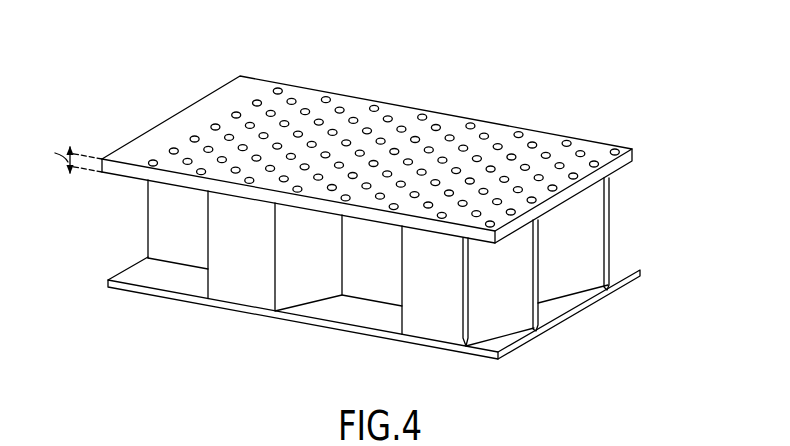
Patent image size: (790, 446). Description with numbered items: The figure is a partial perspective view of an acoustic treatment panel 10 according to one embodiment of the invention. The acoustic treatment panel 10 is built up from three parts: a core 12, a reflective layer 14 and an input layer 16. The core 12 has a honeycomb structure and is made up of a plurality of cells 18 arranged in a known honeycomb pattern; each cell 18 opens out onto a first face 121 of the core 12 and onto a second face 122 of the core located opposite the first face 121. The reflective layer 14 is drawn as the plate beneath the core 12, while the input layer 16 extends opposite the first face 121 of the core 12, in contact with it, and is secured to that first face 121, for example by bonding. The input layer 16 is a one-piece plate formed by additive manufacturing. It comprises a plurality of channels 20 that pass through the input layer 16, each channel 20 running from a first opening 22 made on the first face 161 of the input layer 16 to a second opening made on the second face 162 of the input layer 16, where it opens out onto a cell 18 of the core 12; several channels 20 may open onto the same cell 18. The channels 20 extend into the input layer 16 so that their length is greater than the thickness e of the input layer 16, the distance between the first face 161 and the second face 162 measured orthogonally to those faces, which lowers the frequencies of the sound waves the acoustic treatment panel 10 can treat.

The acoustic treatment panel 10 is at (654, 130).
The core 12 is at (157, 222).
The first face of the core 121 is at (141, 189).
The second face of the core 122 is at (143, 259).
The reflective layer 14 is at (355, 336).
The input layer 16 is at (439, 108).
The first face of the input layer 161 is at (211, 112).
The second face of the input layer 162 is at (585, 198).
The cell 18 is at (503, 317).
The channel 20 is at (547, 153).
The first opening 22 is at (352, 118).